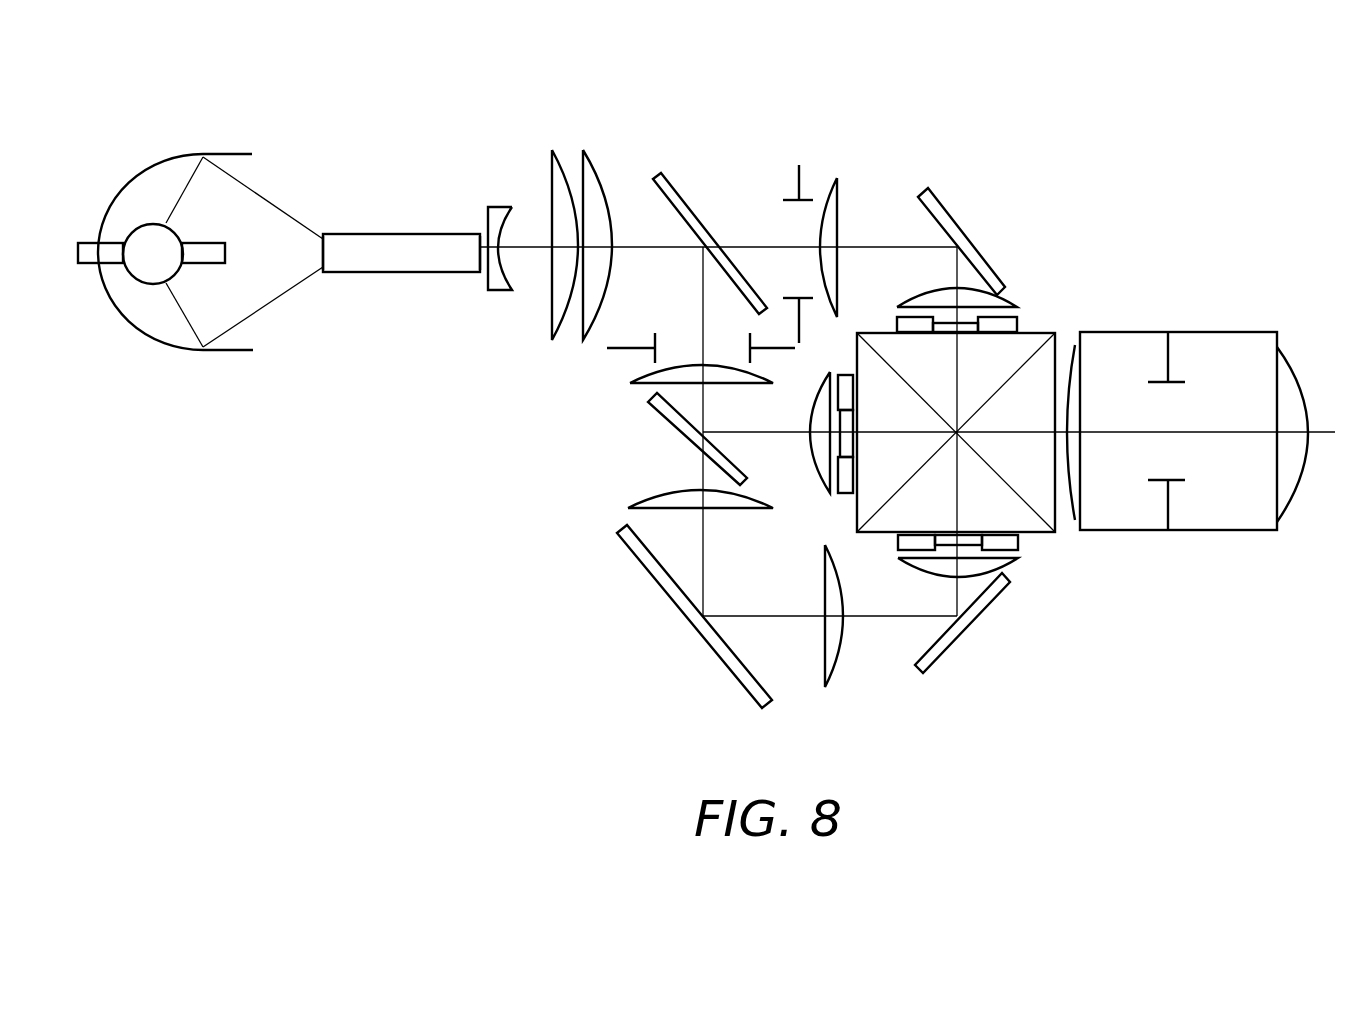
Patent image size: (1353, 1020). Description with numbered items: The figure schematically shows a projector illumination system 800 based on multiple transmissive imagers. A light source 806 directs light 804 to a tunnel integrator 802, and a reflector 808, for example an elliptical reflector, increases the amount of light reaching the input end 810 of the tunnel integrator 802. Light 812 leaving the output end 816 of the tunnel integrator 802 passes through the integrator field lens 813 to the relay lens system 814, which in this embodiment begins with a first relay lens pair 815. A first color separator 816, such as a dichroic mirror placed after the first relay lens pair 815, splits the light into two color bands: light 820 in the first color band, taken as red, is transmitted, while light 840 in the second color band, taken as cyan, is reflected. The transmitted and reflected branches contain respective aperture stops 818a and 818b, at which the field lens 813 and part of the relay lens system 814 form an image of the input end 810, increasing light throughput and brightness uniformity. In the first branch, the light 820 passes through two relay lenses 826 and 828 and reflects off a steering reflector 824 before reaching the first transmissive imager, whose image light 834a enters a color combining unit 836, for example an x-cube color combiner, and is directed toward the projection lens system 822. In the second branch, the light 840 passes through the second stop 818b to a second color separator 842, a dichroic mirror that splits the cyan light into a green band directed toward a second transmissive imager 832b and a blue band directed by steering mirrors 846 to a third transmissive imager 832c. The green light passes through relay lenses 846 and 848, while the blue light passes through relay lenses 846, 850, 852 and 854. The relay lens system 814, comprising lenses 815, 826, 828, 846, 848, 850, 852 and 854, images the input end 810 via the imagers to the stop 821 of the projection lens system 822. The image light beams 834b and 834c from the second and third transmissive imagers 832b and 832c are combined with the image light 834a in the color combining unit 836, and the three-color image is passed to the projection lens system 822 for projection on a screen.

The projector illumination system 800 is at (387, 501).
The tunnel integrator 802 is at (358, 273).
The light 804 is at (257, 308).
The light source 806 is at (142, 287).
The reflector 808 is at (153, 177).
The input end of the tunnel integrator 810 is at (323, 233).
The light output from the tunnel integrator 812 is at (538, 257).
The integrator field lens 813 is at (500, 207).
The relay lens system 814 is at (553, 347).
The first relay lens pair 815 is at (593, 147).
The output end of the tunnel integrator / first color separator 816 is at (477, 277).
The aperture stop 818a is at (800, 165).
The aperture stop 818b is at (626, 352).
The light in the first color band 820 is at (737, 243).
The stop of the projection lens system 821 is at (1170, 513).
The projection lens system 822 is at (1218, 332).
The steering reflector 824 is at (962, 225).
The relay lens 826 is at (840, 217).
The relay lens 828 is at (950, 288).
The second transmissive imager 832b is at (853, 370).
The third transmissive imager 832c is at (1022, 317).
The image light 834a is at (958, 360).
The image light beam 834b is at (900, 435).
The image light beam 834c is at (958, 487).
The color combining unit 836 is at (1040, 332).
The light in the second color band 840 is at (700, 275).
The second color separator 842 is at (660, 408).
The steering mirrors / relay lenses 846 is at (688, 365).
The relay lens 848 is at (812, 453).
The relay lens 850 is at (662, 492).
The relay lens 852 is at (840, 660).
The relay lens 854 is at (1012, 563).